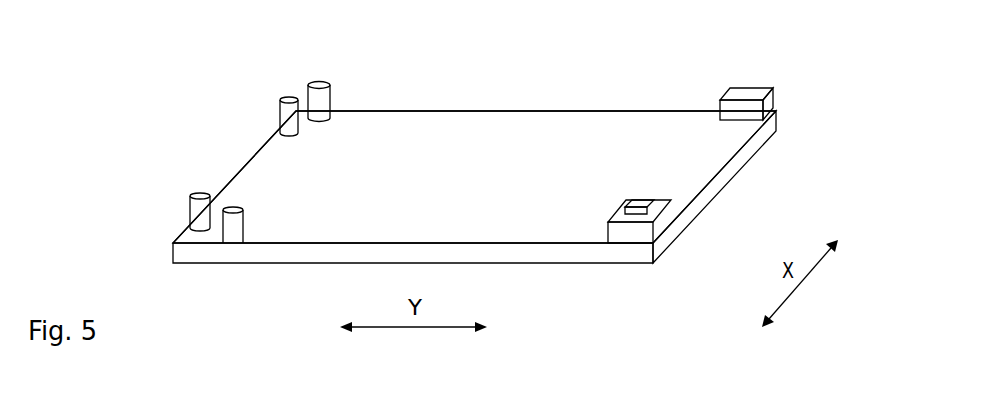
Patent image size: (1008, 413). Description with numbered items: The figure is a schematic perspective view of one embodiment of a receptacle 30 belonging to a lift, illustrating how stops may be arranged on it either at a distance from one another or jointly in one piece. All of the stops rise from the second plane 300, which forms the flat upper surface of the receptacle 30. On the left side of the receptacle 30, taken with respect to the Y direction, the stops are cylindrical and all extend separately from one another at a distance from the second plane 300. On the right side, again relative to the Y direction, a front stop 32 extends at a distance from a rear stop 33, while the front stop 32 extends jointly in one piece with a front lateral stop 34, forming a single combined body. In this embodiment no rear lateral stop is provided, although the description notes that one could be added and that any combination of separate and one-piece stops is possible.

The receptacle 30 is at (145, 139).
The second plane 300 is at (483, 190).
The front stop 32 is at (233, 228).
The rear stop 33 is at (329, 97).
The front lateral stop 34 is at (196, 208).